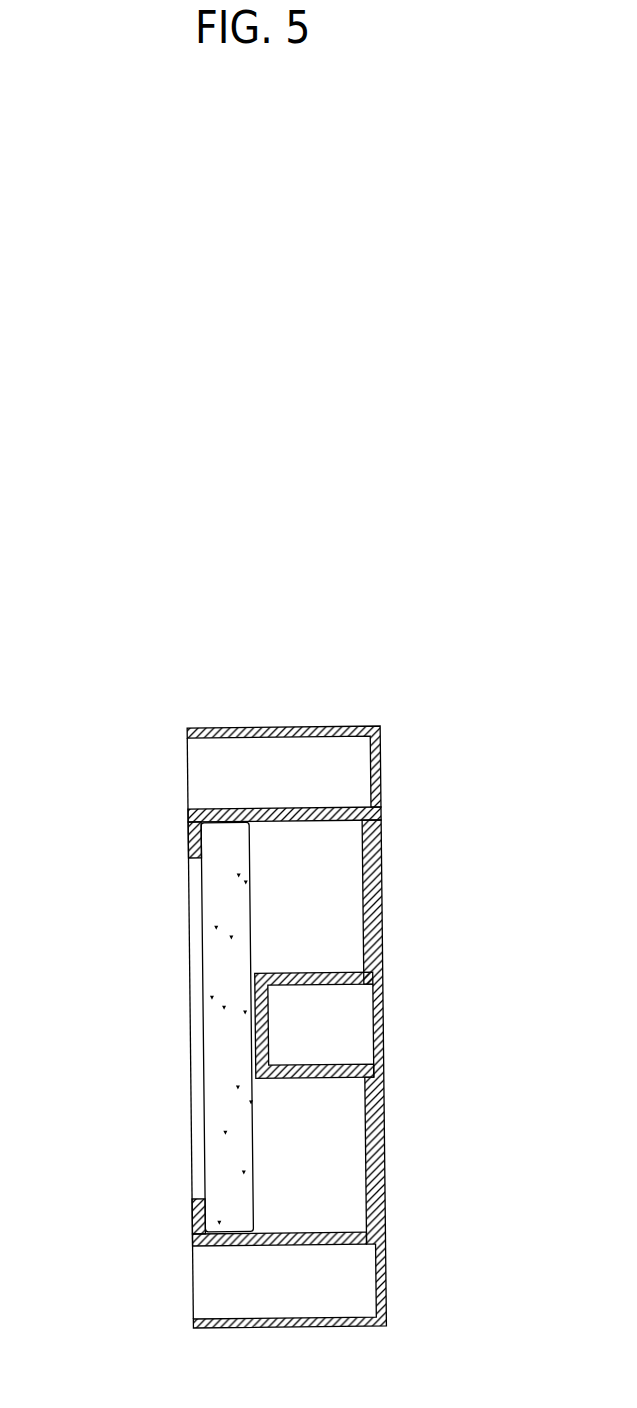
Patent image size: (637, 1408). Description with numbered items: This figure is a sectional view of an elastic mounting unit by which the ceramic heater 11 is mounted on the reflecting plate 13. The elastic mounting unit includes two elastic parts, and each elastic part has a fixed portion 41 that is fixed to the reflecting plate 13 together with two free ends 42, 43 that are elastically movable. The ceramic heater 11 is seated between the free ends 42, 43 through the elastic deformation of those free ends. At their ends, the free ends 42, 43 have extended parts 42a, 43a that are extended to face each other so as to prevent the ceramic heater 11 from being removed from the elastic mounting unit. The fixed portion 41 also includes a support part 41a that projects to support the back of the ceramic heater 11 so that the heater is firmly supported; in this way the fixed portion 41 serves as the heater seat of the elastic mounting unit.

The reflecting plate 13 is at (284, 728).
The fixed portion 41 is at (383, 896).
The support part 41a is at (270, 1028).
The free end 42 is at (252, 808).
The extended part 42a is at (190, 837).
The ceramic heater 11 is at (218, 1035).
The free end 43 is at (273, 1245).
The extended part 43a is at (192, 1222).